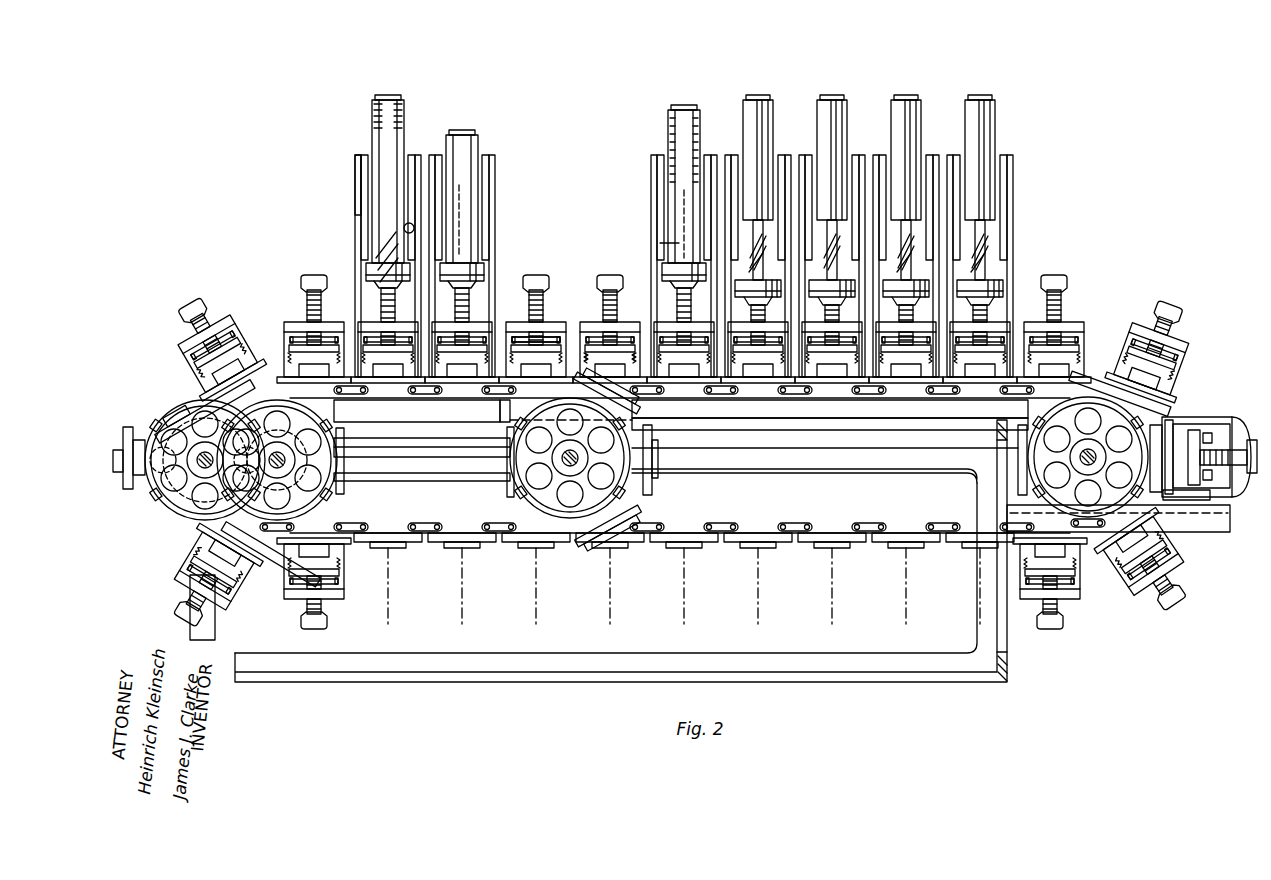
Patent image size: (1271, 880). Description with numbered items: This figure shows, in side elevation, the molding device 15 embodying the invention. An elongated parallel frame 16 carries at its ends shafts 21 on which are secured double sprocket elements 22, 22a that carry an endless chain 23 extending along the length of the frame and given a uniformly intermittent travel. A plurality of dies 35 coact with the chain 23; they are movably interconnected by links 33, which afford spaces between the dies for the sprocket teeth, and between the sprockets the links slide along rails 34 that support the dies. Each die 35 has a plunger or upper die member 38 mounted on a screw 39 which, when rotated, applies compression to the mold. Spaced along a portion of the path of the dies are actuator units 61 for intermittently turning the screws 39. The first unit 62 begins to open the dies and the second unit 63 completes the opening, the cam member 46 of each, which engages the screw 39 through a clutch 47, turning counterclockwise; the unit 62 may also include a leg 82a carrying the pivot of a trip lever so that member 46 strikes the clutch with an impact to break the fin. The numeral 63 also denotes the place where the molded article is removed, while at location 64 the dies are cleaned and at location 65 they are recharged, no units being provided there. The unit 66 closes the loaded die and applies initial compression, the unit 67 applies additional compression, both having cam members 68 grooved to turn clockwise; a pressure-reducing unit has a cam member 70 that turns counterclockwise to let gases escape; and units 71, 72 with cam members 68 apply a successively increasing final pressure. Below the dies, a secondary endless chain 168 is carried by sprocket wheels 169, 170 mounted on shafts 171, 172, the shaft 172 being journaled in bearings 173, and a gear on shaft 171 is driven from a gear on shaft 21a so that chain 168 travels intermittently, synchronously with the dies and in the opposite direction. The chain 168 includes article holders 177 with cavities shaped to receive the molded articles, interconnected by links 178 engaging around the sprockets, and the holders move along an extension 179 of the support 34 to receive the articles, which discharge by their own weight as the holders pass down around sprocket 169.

The device 15 is at (257, 206).
The elongated parallel frame 16 is at (1008, 655).
The shaft 21 is at (1085, 450).
The shaft 21a is at (340, 443).
The double sprocket element 22 is at (336, 492).
The double sprocket element 22a is at (1040, 481).
The endless chain 23 is at (1105, 334).
The link 33 is at (870, 398).
The rail 34 is at (808, 418).
The die 35 is at (1190, 375).
The upper die member 38 is at (546, 337).
The screw 39 is at (620, 320).
The cam member 46 is at (393, 248).
The clutch 47 is at (349, 286).
The actuator unit 61 is at (340, 158).
The first unit 62 is at (408, 208).
The second unit 63 is at (465, 75).
The location 64 is at (539, 229).
The location 65 is at (609, 229).
The unit 66 is at (683, 74).
The unit 67 is at (758, 69).
The cam member 68 is at (660, 243).
The cam member 70 is at (836, 253).
The unit 71 is at (906, 67).
The unit 72 is at (983, 67).
The leg 82a is at (404, 226).
The secondary endless chain 168 is at (148, 362).
The sprocket wheel 169 is at (200, 463).
The sprocket wheel 170 is at (585, 522).
The shaft 171 is at (158, 497).
The shaft 172 is at (562, 462).
The bearing 173 is at (420, 524).
The article carrier 177 is at (118, 452).
The link 178 is at (352, 398).
The extension 179 is at (464, 411).